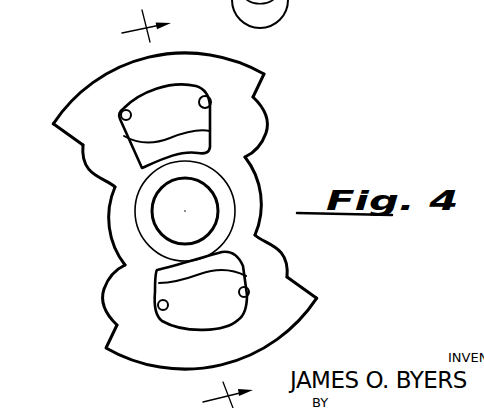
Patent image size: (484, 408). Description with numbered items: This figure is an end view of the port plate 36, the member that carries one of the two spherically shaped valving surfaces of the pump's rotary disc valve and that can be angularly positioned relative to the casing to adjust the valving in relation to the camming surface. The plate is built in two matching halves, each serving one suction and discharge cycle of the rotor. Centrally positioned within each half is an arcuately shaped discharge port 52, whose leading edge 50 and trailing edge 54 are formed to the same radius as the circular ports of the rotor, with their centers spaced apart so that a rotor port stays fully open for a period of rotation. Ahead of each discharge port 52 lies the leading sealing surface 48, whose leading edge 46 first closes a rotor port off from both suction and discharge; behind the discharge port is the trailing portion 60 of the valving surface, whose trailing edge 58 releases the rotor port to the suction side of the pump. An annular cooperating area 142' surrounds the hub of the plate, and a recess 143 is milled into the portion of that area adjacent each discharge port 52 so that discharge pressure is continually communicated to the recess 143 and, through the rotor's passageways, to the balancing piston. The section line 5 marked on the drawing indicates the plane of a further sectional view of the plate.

The section line 5- 5 is at (188, 209).
The port plate 36 is at (250, 78).
The leading edge 46 is at (266, 128).
The leading sealing surface 48 is at (130, 283).
The leading edge 50 is at (207, 100).
The discharge port 52 is at (155, 108).
The trailing edge 54 is at (120, 113).
The trailing edge 58 is at (283, 247).
The trailing portion 60 is at (93, 150).
The annular cooperating area 142' is at (295, 185).
The recess 143 is at (148, 152).